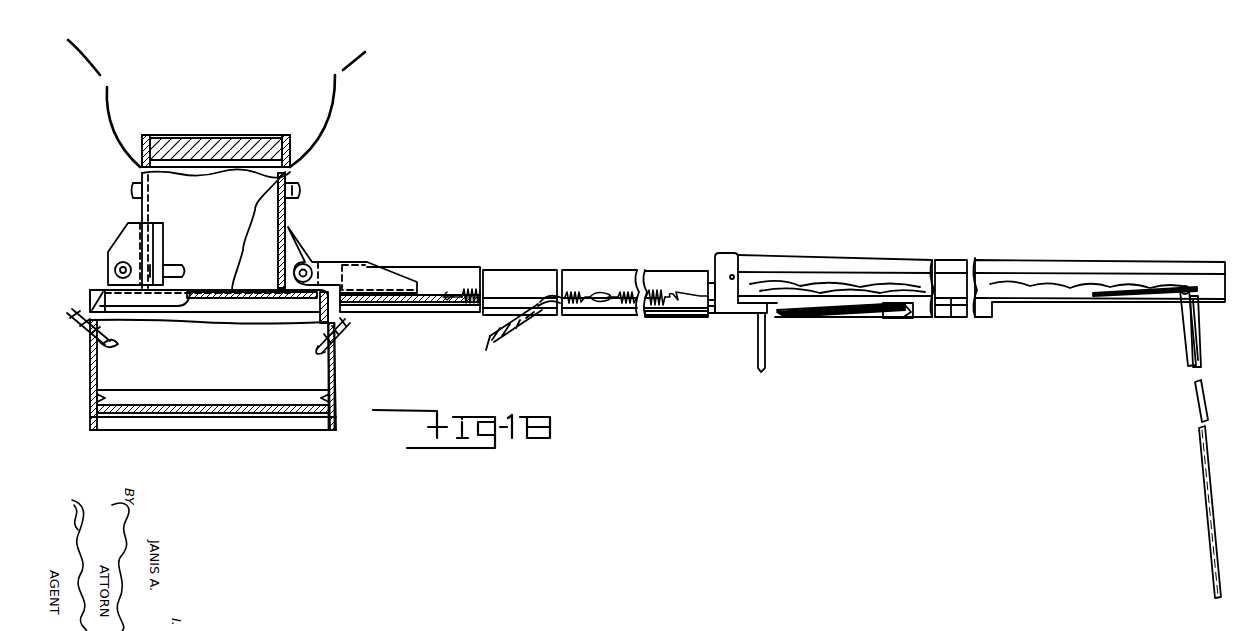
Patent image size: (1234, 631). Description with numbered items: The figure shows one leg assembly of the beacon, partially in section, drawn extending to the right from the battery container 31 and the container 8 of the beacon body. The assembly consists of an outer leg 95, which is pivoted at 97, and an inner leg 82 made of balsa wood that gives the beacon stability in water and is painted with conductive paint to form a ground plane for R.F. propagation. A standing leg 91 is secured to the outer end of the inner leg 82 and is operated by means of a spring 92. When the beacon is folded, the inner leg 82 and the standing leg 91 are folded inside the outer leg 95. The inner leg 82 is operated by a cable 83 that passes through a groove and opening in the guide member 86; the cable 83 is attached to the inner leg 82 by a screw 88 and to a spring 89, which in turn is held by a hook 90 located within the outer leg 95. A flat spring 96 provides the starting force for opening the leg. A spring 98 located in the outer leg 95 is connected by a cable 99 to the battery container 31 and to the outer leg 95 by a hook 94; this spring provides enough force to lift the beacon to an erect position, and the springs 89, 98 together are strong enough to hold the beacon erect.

The lamp housing can 8 is at (213, 360).
The battery container 31 is at (337, 384).
The inner leg 82 is at (883, 254).
The cable 83 is at (708, 317).
The guide member 86 is at (728, 306).
The screw 88 is at (902, 318).
The spring 89 is at (470, 289).
The hook 90 is at (448, 289).
The standing leg 91 is at (1187, 355).
The spring 92 is at (1180, 316).
The hook 94 is at (672, 298).
The outer leg 95 is at (585, 316).
The flat spring 96 is at (352, 62).
The pivot 97 is at (307, 265).
The spring 98 is at (647, 297).
The cable 99 is at (357, 327).